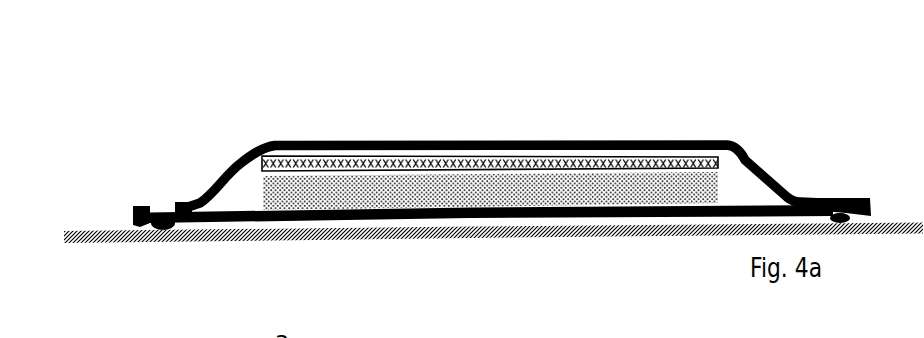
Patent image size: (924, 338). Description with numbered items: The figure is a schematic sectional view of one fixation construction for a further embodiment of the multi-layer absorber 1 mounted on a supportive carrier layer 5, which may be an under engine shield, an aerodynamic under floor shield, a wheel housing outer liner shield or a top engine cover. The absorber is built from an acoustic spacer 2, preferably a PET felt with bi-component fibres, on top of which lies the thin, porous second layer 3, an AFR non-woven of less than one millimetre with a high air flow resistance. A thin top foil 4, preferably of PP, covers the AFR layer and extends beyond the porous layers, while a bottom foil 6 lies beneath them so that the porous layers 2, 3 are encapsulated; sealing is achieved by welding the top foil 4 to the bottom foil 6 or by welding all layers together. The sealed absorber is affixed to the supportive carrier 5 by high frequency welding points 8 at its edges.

The multi-layer absorber 1 is at (746, 117).
The spacer 2 is at (328, 185).
The second layer 3 is at (443, 157).
The top foil 4 is at (553, 141).
The supportive carrier layer 5 is at (114, 233).
The bottom foil 6 is at (483, 218).
The high frequency welding points 8 is at (172, 243).